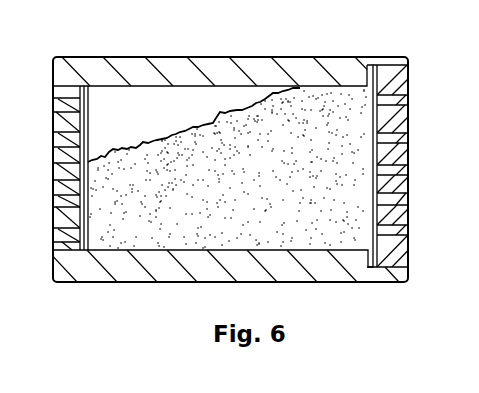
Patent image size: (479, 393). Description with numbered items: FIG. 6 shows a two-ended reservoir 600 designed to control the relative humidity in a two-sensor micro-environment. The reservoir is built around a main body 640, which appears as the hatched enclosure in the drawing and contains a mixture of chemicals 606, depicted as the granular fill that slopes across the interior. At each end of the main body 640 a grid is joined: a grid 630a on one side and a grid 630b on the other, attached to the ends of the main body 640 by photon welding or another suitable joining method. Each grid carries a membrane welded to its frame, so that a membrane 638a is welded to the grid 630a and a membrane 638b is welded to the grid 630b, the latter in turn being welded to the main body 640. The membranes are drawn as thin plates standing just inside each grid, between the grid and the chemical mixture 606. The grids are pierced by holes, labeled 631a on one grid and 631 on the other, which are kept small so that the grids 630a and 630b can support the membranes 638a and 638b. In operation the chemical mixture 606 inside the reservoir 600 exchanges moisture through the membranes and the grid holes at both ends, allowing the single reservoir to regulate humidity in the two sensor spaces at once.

The two-ended reservoir 600 is at (350, 309).
The mixture of chemicals 606 is at (229, 195).
The grid 630a is at (53, 84).
The grid 630b is at (410, 258).
The insulating bricks of right wall 631 is at (411, 131).
The holes in the grid 631a is at (53, 165).
The membrane 638a is at (88, 106).
The membrane 638b is at (366, 106).
The main body 640 is at (172, 58).